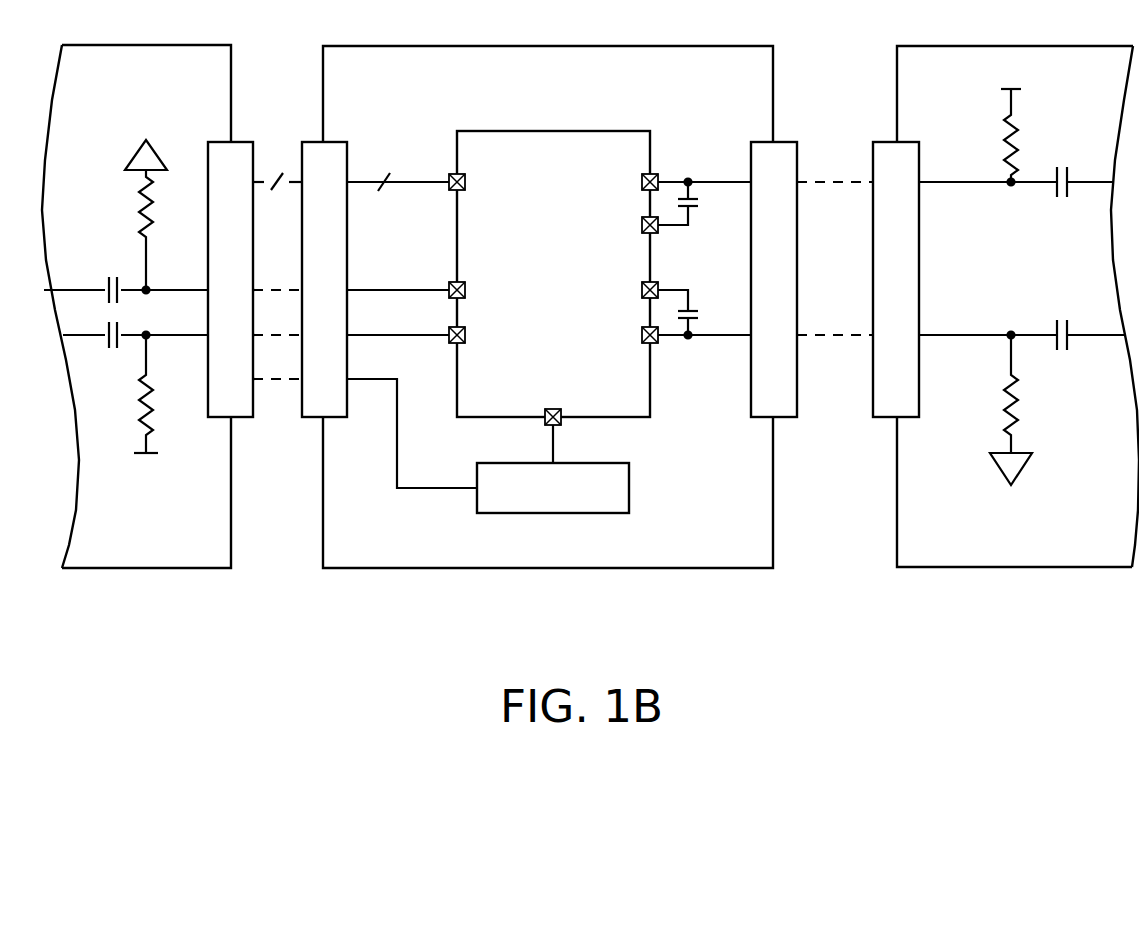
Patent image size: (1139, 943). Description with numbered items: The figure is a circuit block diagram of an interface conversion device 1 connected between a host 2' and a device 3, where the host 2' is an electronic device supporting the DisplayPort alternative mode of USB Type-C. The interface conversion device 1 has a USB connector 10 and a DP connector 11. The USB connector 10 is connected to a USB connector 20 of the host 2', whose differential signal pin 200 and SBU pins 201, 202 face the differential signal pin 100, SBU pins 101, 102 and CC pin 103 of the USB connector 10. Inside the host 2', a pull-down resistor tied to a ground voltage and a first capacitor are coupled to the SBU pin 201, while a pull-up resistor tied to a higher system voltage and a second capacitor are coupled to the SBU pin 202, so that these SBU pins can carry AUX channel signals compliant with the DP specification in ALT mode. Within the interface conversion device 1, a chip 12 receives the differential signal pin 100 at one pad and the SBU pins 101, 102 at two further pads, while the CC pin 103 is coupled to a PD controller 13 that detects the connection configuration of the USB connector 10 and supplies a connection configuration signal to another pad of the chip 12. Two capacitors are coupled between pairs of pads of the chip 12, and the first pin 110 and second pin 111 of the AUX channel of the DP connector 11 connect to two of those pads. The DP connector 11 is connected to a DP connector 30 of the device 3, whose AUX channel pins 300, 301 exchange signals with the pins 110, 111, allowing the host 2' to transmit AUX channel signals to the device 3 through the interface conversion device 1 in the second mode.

The interface conversion device 1 is at (543, 568).
The host 2' is at (136, 351).
The device 3 is at (1000, 567).
The USB connector 10 is at (335, 142).
The DP connector 11 is at (785, 142).
The chip 12 is at (553, 131).
The PD controller 13 is at (629, 488).
The USB connector 20 is at (216, 142).
The DP connector 30 is at (907, 142).
The differential signal pin 100 is at (378, 182).
The SBU pin 101 is at (378, 289).
The SBU pin 102 is at (378, 334).
The CC pin 103 is at (392, 424).
The first pin of the AUX channel 110 is at (814, 182).
The second pin of the AUX channel 111 is at (814, 334).
The differential signal pin 200 is at (256, 182).
The SBU pin 201 is at (256, 289).
The SBU pin 202 is at (256, 348).
The AUX channel pin 300 is at (995, 182).
The AUX channel pin 301 is at (1001, 334).